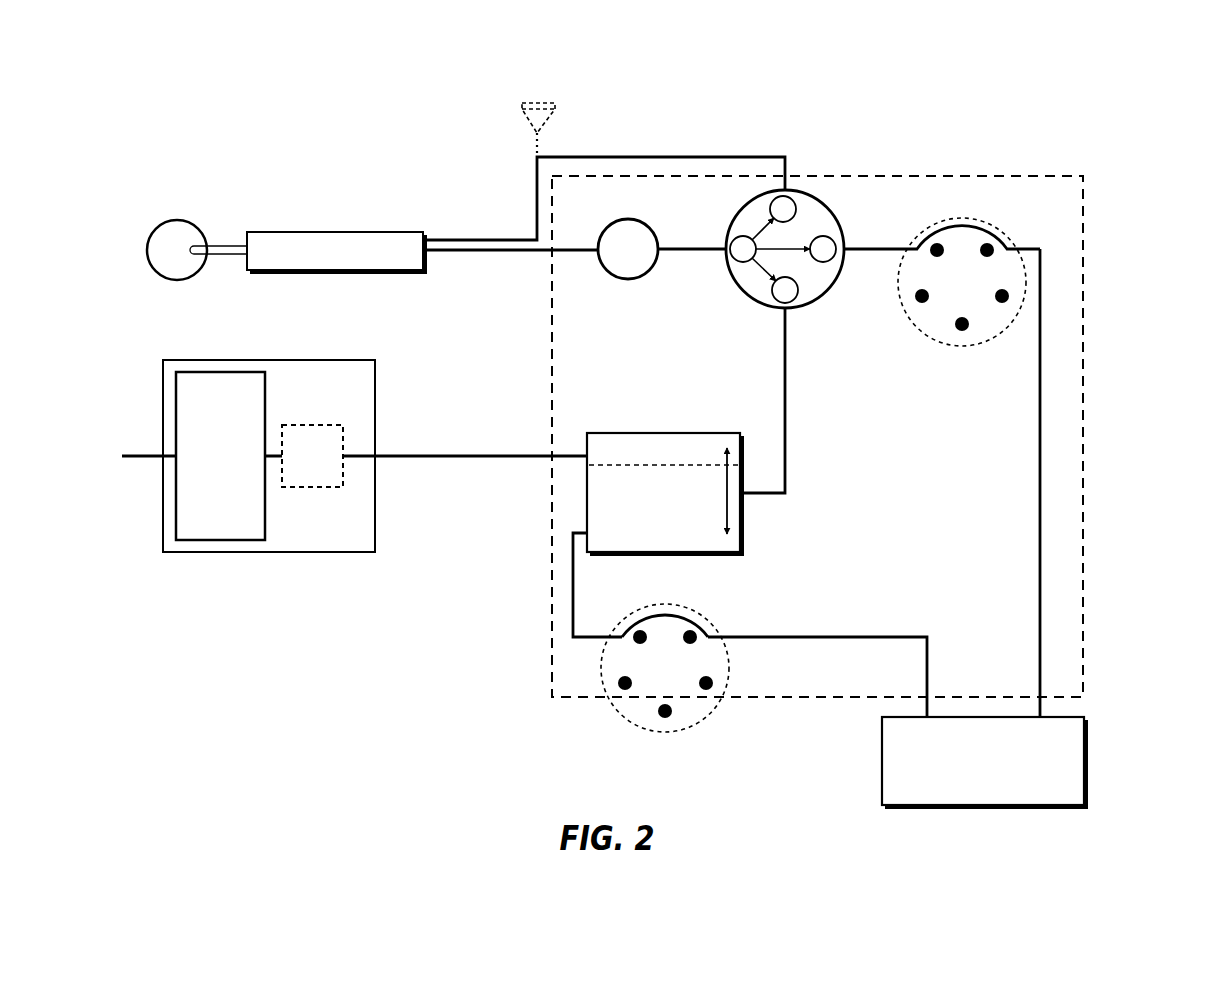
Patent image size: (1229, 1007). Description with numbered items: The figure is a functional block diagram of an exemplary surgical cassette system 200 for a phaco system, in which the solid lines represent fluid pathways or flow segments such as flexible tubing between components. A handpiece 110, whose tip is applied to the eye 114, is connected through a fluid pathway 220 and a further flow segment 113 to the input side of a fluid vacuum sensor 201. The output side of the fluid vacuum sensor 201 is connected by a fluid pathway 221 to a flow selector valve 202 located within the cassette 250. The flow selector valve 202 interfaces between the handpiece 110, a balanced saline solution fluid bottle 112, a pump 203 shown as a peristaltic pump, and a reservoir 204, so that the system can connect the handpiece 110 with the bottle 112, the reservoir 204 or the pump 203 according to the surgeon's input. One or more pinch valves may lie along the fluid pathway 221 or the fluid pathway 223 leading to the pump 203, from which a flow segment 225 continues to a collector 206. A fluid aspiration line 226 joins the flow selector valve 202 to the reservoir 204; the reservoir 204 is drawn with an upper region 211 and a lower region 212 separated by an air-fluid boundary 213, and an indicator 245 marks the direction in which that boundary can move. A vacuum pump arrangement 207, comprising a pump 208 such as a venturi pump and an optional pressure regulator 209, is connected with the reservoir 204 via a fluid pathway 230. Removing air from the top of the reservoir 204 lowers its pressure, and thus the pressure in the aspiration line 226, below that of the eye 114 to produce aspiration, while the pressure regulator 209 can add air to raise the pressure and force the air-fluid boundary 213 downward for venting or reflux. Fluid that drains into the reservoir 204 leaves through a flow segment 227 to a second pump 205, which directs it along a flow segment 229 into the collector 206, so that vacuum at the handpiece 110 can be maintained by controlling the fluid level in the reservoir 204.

The surgical cassette system 200 is at (1127, 74).
The eye 114 is at (177, 220).
The handpiece 110 is at (273, 232).
The fluid supply line 113 is at (457, 240).
The fluid pathway 220 is at (478, 256).
The balanced saline solution fluid bottle 112 is at (520, 120).
The fluid vacuum sensor 201 is at (628, 220).
The fluid pathway 221 is at (670, 252).
The flow selector valve 202 is at (810, 193).
The fluid pathway 223 is at (855, 248).
The pump 203 is at (932, 340).
The conduit to collector 225 is at (1037, 460).
The cassette 250 is at (1057, 176).
The fluid aspiration line 226 is at (787, 387).
The reservoir 204 is at (650, 555).
The air-fluid boundary 213 is at (688, 456).
The upper reservoir region 211 is at (633, 443).
The lower reservoir region 212 is at (605, 520).
The level range arrow 245 is at (738, 510).
The conduit 227 is at (573, 593).
The pump 205 is at (645, 732).
The conduit 229 is at (810, 636).
The collector 206 is at (882, 753).
The fluid pathway 230 is at (458, 455).
The vacuum pump arrangement 207 is at (217, 553).
The pump 208 is at (202, 372).
The pressure regulator 209 is at (310, 487).